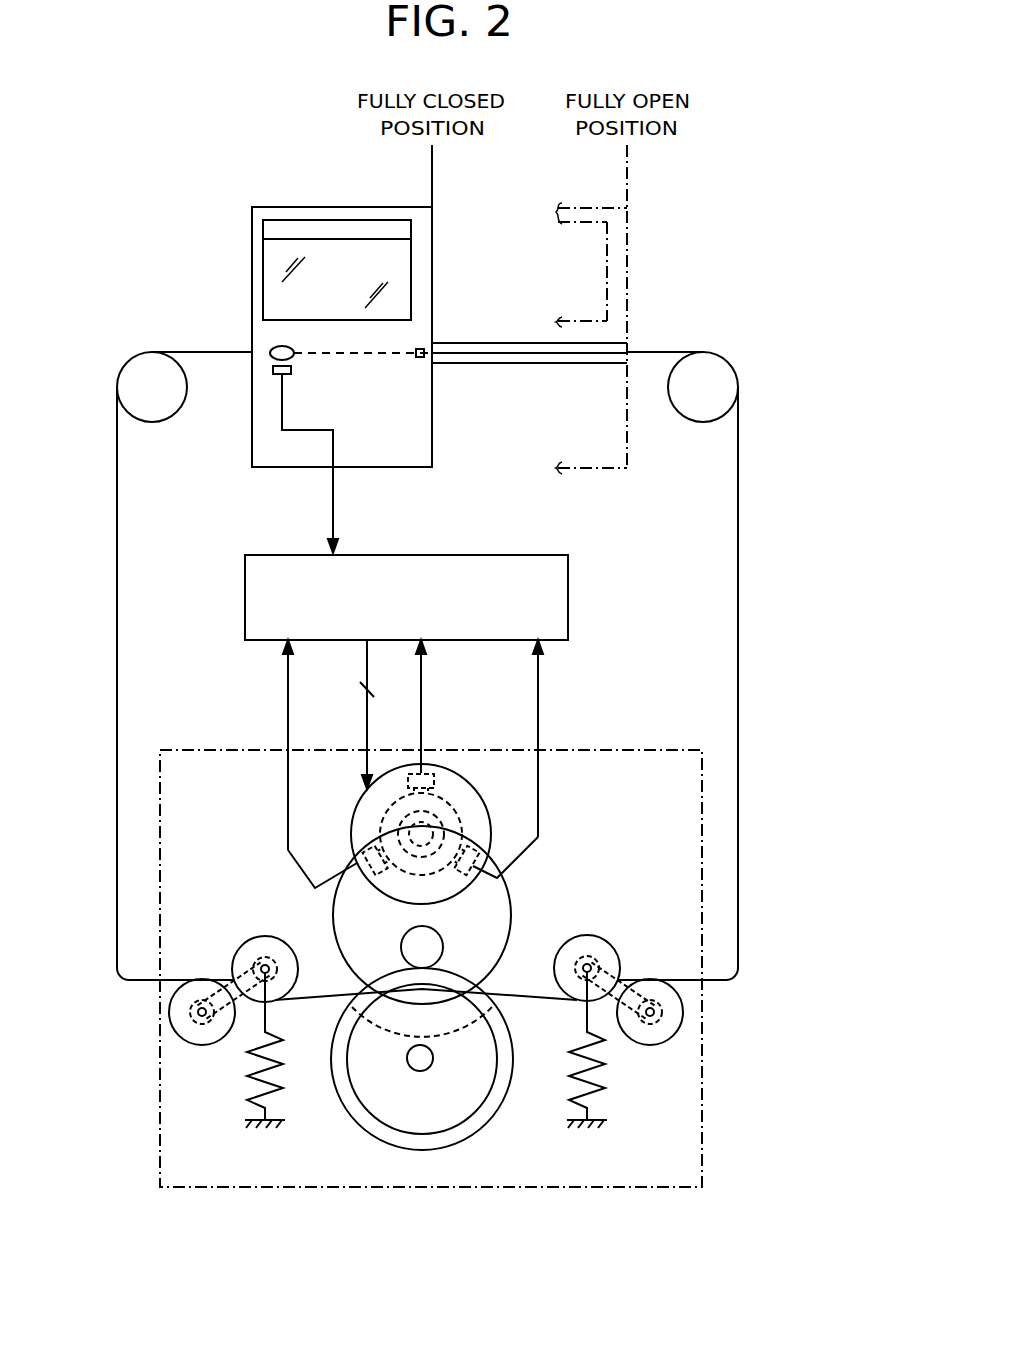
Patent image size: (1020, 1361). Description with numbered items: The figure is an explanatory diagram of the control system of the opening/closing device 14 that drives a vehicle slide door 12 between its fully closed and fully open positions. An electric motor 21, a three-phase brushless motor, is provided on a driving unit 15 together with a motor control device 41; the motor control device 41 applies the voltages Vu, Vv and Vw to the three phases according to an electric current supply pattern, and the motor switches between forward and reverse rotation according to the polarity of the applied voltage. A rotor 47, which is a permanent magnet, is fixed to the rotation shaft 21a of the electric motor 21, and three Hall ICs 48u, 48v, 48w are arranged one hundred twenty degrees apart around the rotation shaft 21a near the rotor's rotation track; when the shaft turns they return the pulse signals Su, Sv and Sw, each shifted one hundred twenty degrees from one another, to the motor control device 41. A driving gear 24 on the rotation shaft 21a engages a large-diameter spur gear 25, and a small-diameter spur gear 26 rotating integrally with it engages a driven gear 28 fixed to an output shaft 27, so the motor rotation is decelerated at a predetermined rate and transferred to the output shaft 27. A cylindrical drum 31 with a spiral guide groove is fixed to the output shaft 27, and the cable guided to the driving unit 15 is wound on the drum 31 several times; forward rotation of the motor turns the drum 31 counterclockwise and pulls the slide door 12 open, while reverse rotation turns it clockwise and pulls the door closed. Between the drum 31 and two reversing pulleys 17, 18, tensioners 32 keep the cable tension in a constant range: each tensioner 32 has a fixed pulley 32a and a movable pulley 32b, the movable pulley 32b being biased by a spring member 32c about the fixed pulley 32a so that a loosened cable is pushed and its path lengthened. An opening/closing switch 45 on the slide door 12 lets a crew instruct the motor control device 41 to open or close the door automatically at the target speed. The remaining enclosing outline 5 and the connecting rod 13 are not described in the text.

The shade sheet belt 5 is at (115, 797).
The slide door 12 is at (345, 203).
The connecting rod 13 is at (635, 340).
The opening/closing device 14 is at (757, 410).
The driving unit 15 is at (652, 745).
The reversing pulley 17 is at (698, 412).
The reversing pulley 18 is at (148, 412).
The electric motor 21 is at (378, 888).
The rotation shaft 21a is at (400, 836).
The driving gear 24 is at (370, 818).
The large-diameter spur gear 25 is at (502, 896).
The small-diameter spur gear 26 is at (444, 935).
The output shaft 27 is at (425, 1072).
The driven gear 28 is at (478, 1131).
The drum 31 is at (360, 1105).
The tensioner 32 is at (382, 1001).
The fixed pulley 32a is at (183, 1037).
The movable pulley 32b is at (266, 938).
The spring member 32c is at (255, 1095).
The motor control device 41 is at (575, 590).
The opening/closing switch 45 is at (272, 370).
The rotor 47 is at (368, 812).
The Hall IC 48u is at (360, 856).
The Hall IC 48v is at (478, 830).
The Hall IC 48w is at (415, 768).